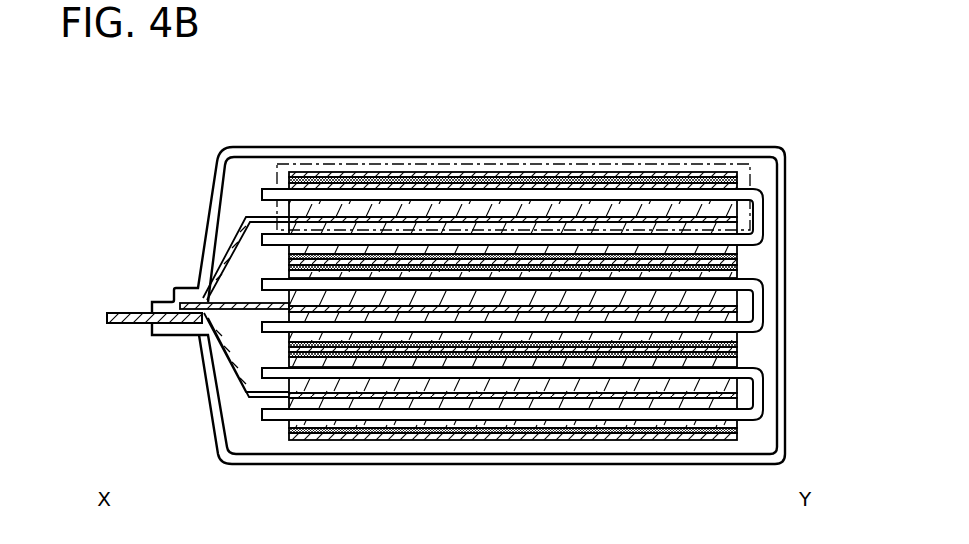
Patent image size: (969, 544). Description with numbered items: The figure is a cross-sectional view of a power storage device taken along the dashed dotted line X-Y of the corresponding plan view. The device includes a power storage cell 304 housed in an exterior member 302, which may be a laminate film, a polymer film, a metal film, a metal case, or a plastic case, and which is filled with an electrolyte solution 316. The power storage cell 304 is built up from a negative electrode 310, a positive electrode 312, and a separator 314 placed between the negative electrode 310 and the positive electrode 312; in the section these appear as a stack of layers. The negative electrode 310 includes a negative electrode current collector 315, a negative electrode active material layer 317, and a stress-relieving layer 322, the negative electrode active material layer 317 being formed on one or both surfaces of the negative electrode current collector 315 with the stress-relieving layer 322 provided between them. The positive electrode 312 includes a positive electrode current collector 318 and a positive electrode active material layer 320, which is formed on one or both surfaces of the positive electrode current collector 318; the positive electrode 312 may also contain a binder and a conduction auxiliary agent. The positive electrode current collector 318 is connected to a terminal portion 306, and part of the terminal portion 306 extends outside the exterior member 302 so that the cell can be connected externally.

The exterior member 302 is at (208, 232).
The power storage cell 304 is at (745, 160).
The terminal portion 306 is at (120, 324).
The negative electrode 310 is at (695, 90).
The positive electrode 312 is at (298, 90).
The separator 314 is at (468, 195).
The negative electrode current collector 315 is at (672, 175).
The electrolyte solution 316 is at (243, 192).
The negative electrode active material layer 317 is at (540, 186).
The positive electrode current collector 318 is at (318, 218).
The positive electrode active material layer 320 is at (385, 210).
The stress-relieving layer 322 is at (603, 180).